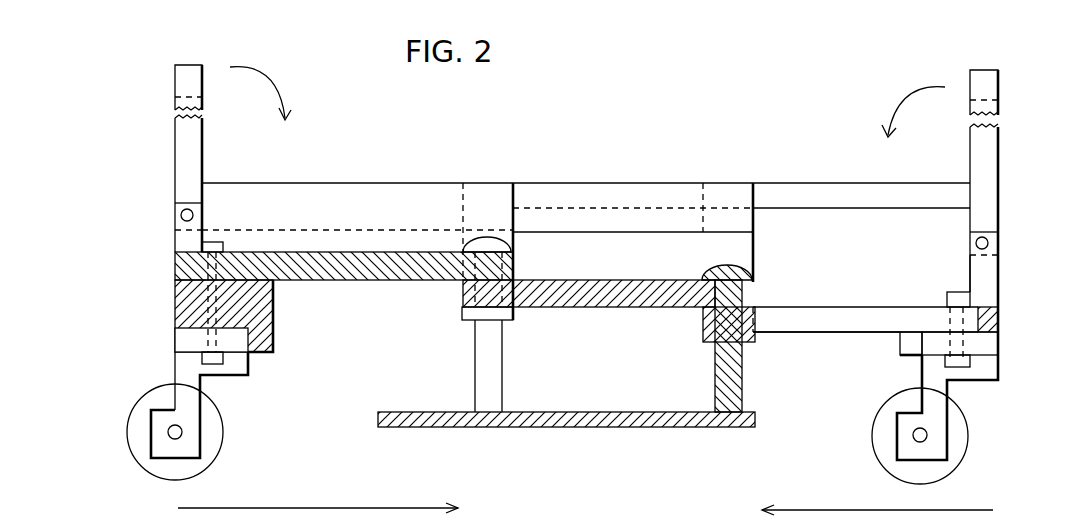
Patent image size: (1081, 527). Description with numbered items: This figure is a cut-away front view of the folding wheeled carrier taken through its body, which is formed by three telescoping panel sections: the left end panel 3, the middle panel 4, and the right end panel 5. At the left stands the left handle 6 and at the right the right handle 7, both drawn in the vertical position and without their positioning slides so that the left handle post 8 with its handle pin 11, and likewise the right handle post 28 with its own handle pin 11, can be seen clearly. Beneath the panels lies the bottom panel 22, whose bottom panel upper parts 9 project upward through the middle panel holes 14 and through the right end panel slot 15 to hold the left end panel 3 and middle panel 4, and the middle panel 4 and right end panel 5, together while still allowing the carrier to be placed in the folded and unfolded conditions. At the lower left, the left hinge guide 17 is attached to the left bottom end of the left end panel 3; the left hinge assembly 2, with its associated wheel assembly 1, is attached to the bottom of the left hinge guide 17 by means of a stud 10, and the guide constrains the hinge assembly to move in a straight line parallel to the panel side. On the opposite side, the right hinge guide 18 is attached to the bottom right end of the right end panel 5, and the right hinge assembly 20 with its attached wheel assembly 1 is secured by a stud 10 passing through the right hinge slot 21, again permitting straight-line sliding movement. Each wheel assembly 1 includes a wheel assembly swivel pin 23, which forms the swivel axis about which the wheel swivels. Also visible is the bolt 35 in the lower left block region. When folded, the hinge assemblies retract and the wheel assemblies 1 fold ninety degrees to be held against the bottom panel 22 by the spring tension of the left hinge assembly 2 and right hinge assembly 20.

The wheel assembly 1 is at (127, 432).
The left hinge assembly 2 is at (175, 340).
The left end panel 3 is at (413, 183).
The middle panel 4 is at (680, 183).
The right end panel 5 is at (793, 183).
The left handle 6 is at (175, 85).
The right handle 7 is at (998, 78).
The left handle post 8 is at (175, 245).
The bottom panel upper parts 9 is at (717, 266).
The stud 10 is at (227, 240).
The handle pin 11 is at (180, 217).
The middle panel holes 14 is at (477, 300).
The right end panel slot 15 is at (990, 316).
The left hinge guide 17 is at (273, 318).
The right hinge guide 18 is at (900, 357).
The right hinge assembly 20 is at (900, 345).
The right hinge slot 21 is at (963, 342).
The bottom panel 22 is at (582, 427).
The wheel assembly swivel pin 23 is at (210, 375).
The right handle post 28 is at (998, 270).
The bolt 35 is at (177, 277).